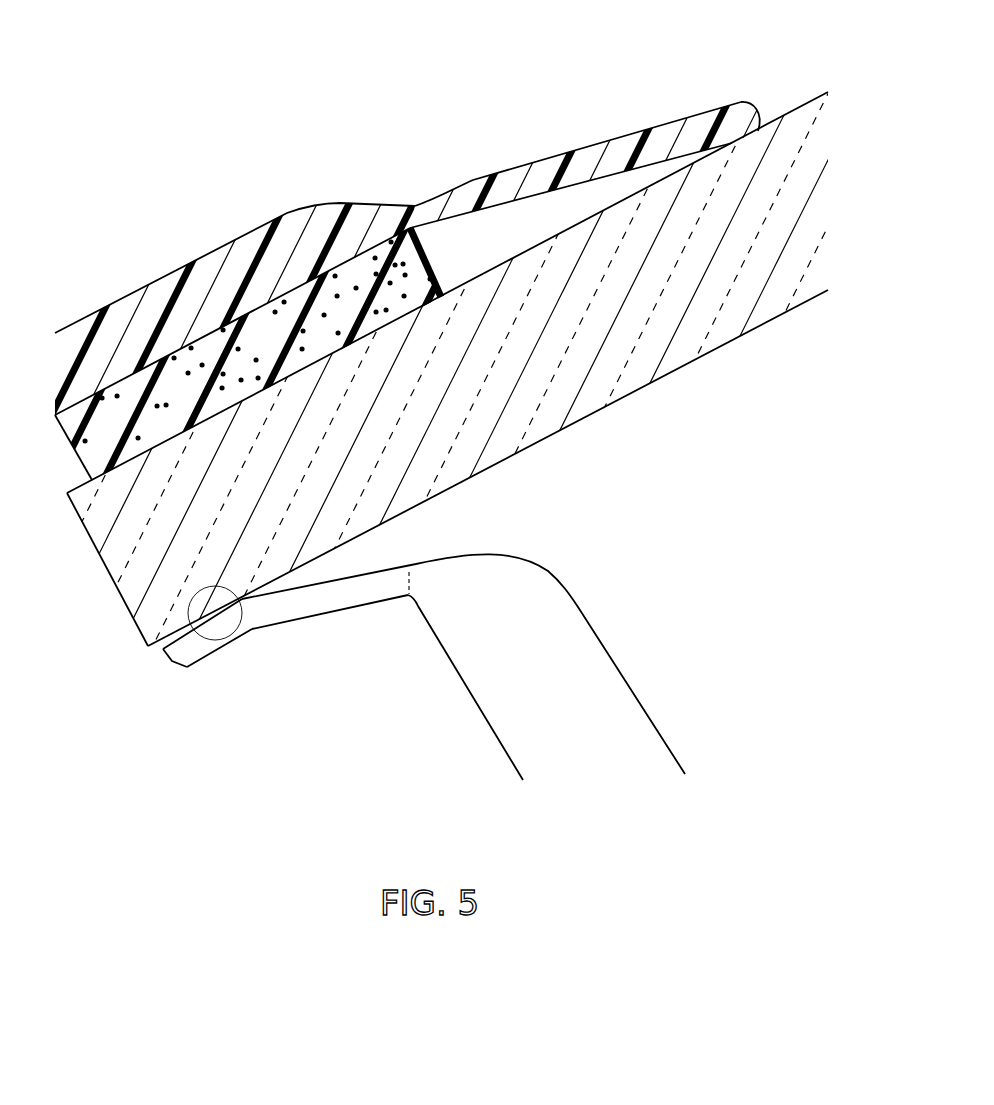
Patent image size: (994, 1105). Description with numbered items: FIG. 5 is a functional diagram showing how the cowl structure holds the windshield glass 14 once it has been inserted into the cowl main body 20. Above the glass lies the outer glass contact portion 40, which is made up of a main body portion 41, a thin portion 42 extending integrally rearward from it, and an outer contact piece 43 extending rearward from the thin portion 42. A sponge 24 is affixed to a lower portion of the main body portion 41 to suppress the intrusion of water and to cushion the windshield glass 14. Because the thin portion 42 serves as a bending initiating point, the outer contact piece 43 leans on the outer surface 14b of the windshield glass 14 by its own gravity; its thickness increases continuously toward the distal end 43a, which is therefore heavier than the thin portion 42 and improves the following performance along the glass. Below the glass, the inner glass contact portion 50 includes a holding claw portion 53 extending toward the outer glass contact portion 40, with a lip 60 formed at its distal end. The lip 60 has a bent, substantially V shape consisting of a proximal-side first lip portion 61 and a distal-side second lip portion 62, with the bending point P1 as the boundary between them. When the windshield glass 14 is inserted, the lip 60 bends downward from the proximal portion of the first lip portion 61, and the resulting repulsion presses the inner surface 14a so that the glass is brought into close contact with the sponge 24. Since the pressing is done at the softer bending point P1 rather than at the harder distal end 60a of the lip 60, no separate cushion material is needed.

The windshield glass 14 is at (455, 350).
The inner surface 14a is at (645, 391).
The outer surface 14b is at (800, 108).
The cowl main body 20 is at (96, 131).
The sponge 24 is at (77, 456).
The outer glass contact portion 40 is at (404, 260).
The main body portion 41 is at (295, 210).
The thin portion 42 is at (437, 196).
The outer contact piece 43 is at (591, 154).
The distal end 43a is at (762, 118).
The inner glass contact portion 50 is at (464, 672).
The holding claw portion 53 is at (570, 640).
The lip 60 is at (272, 677).
The first lip portion 61 is at (330, 600).
The second lip portion 62 is at (212, 674).
The distal end 60a is at (171, 661).
The bending point P1 is at (194, 634).